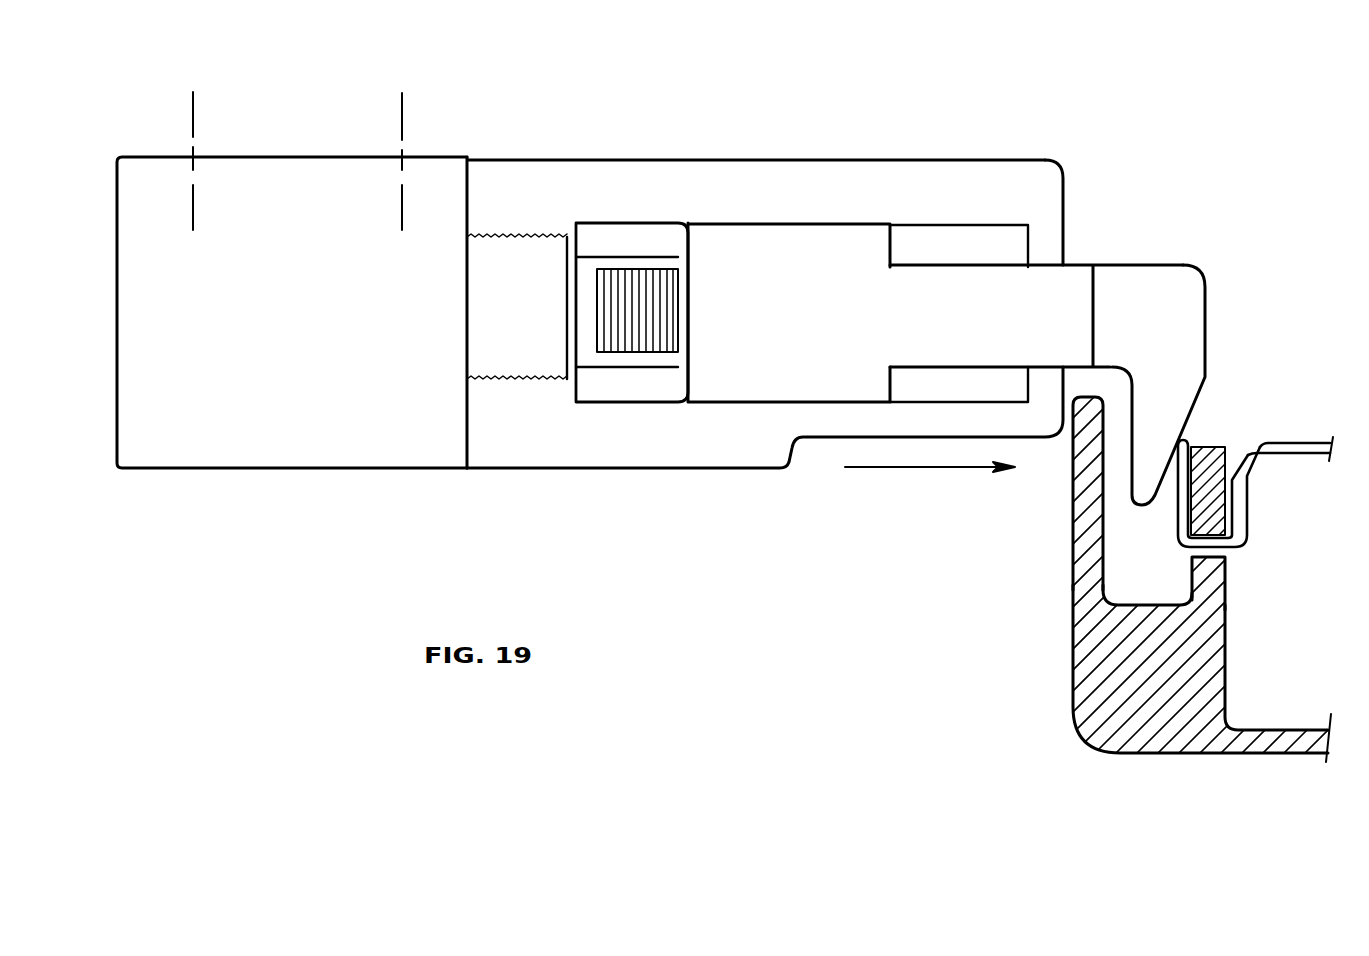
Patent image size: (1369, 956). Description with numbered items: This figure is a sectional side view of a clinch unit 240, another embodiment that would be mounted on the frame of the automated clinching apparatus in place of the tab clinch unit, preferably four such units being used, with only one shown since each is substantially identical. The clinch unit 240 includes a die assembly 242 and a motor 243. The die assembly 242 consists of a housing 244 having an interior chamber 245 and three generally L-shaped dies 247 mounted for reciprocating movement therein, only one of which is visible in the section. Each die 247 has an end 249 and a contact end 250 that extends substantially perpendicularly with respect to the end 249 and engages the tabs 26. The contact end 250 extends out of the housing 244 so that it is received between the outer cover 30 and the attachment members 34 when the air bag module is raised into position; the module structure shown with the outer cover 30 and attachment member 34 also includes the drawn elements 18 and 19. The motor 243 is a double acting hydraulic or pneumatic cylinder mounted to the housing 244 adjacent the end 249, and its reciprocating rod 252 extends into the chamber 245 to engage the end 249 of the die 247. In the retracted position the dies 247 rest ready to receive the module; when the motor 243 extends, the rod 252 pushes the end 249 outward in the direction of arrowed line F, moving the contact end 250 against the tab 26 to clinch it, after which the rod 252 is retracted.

The clinch unit 240 is at (703, 503).
The die assembly 242 is at (1038, 157).
The motor 243 is at (437, 182).
The housing 244 is at (640, 160).
The interior chamber 245 is at (630, 382).
The die 247 is at (960, 307).
The end 249 is at (700, 237).
The contact end 250 is at (1178, 388).
The reciprocating rod 252 is at (515, 263).
The retaining strip 18 is at (1305, 455).
The frame member 19 is at (1086, 650).
The tab 26 is at (1180, 460).
The outer cover 30 is at (1073, 505).
The attachment member 34 is at (1226, 565).
The arrowed line F is at (900, 470).